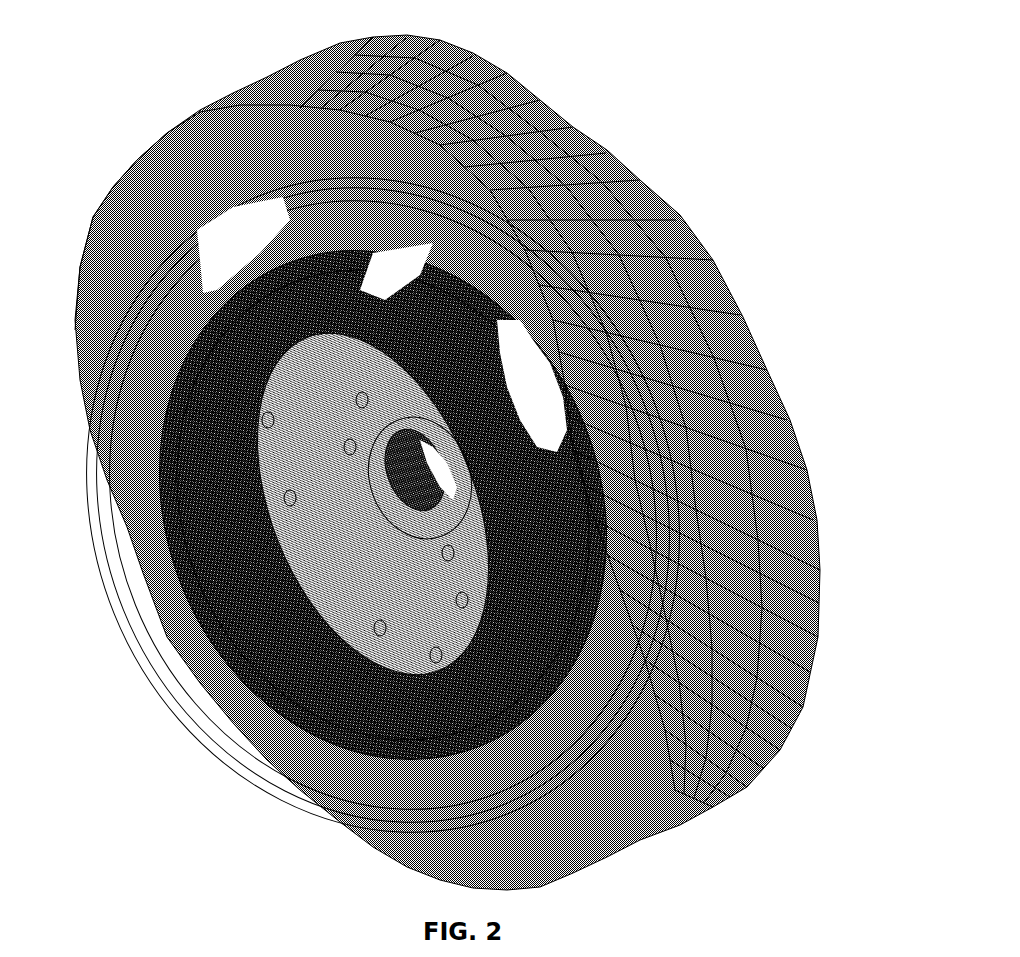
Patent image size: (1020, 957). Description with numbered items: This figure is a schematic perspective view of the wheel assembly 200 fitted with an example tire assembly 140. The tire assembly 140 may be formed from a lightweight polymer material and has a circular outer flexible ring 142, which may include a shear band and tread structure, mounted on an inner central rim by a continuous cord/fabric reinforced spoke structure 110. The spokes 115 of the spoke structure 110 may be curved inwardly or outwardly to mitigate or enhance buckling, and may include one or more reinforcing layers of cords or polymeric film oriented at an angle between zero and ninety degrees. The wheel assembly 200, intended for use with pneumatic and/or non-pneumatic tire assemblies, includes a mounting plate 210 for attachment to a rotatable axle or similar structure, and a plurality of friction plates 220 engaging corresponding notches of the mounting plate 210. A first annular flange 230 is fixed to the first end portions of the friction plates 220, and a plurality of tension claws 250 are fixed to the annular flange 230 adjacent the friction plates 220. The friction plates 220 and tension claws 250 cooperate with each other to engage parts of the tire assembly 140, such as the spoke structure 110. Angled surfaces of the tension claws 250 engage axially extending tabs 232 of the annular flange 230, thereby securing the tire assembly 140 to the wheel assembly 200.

The wheel assembly 200 is at (260, 688).
The spoke structure 110 is at (320, 237).
The spokes 115 is at (185, 248).
The tire assembly 140 is at (718, 275).
The outer flexible ring 142 is at (168, 167).
The mounting plate 210 is at (285, 460).
The friction plates 220 is at (308, 552).
The first annular flange 230 is at (477, 430).
The axially extending tabs 232 is at (553, 530).
The tension claws 250 is at (403, 253).